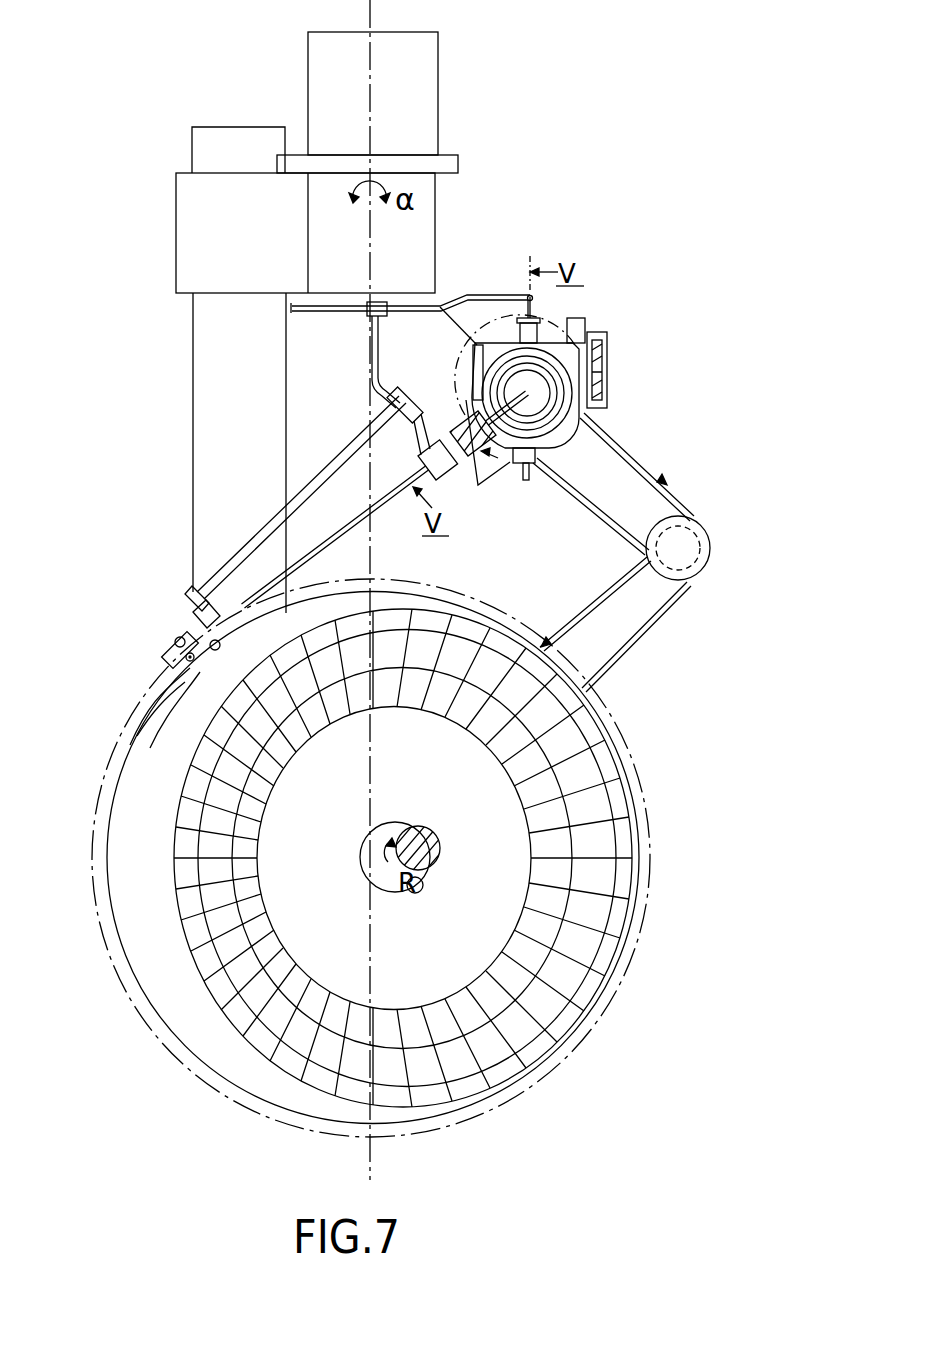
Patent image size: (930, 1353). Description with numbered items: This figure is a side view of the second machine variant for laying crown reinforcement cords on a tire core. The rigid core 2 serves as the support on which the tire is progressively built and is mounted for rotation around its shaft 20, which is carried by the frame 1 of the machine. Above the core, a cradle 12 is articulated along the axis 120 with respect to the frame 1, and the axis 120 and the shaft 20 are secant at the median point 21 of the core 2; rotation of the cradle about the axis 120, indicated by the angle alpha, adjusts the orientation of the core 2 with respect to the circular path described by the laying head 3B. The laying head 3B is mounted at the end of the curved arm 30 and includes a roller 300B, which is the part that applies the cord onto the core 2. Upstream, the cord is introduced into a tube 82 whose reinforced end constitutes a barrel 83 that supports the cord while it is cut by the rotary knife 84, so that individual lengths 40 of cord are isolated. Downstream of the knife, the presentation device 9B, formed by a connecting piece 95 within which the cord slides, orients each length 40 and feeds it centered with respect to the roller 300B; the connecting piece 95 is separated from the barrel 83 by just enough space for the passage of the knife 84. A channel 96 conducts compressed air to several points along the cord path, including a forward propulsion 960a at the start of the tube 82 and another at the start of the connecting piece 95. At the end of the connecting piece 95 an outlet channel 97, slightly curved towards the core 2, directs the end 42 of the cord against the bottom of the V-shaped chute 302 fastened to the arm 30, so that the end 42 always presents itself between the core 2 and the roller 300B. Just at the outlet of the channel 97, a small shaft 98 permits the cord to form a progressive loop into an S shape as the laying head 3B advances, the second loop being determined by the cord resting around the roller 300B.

The axis 120 is at (372, 14).
The frame 1 is at (440, 100).
The cradle 12 is at (436, 210).
The channel 96 is at (501, 296).
The presentation device 9B is at (241, 540).
The length of cord 40 is at (376, 508).
The connecting piece 95 is at (422, 506).
The barrel 83 is at (478, 440).
The tube 82 is at (516, 450).
The rotary knife 84 is at (540, 460).
The propulsion in forward direction 960a is at (453, 476).
The rigid core 2 is at (192, 1011).
The median point 21 is at (366, 866).
The shaft 20 is at (383, 892).
The outlet channel 97 is at (193, 600).
The end of the cord 42 is at (195, 612).
The curved arm 30 is at (176, 638).
The laying head 3B is at (158, 648).
The small shaft 98 is at (217, 649).
The chute 302 is at (184, 692).
The roller 300B is at (152, 680).